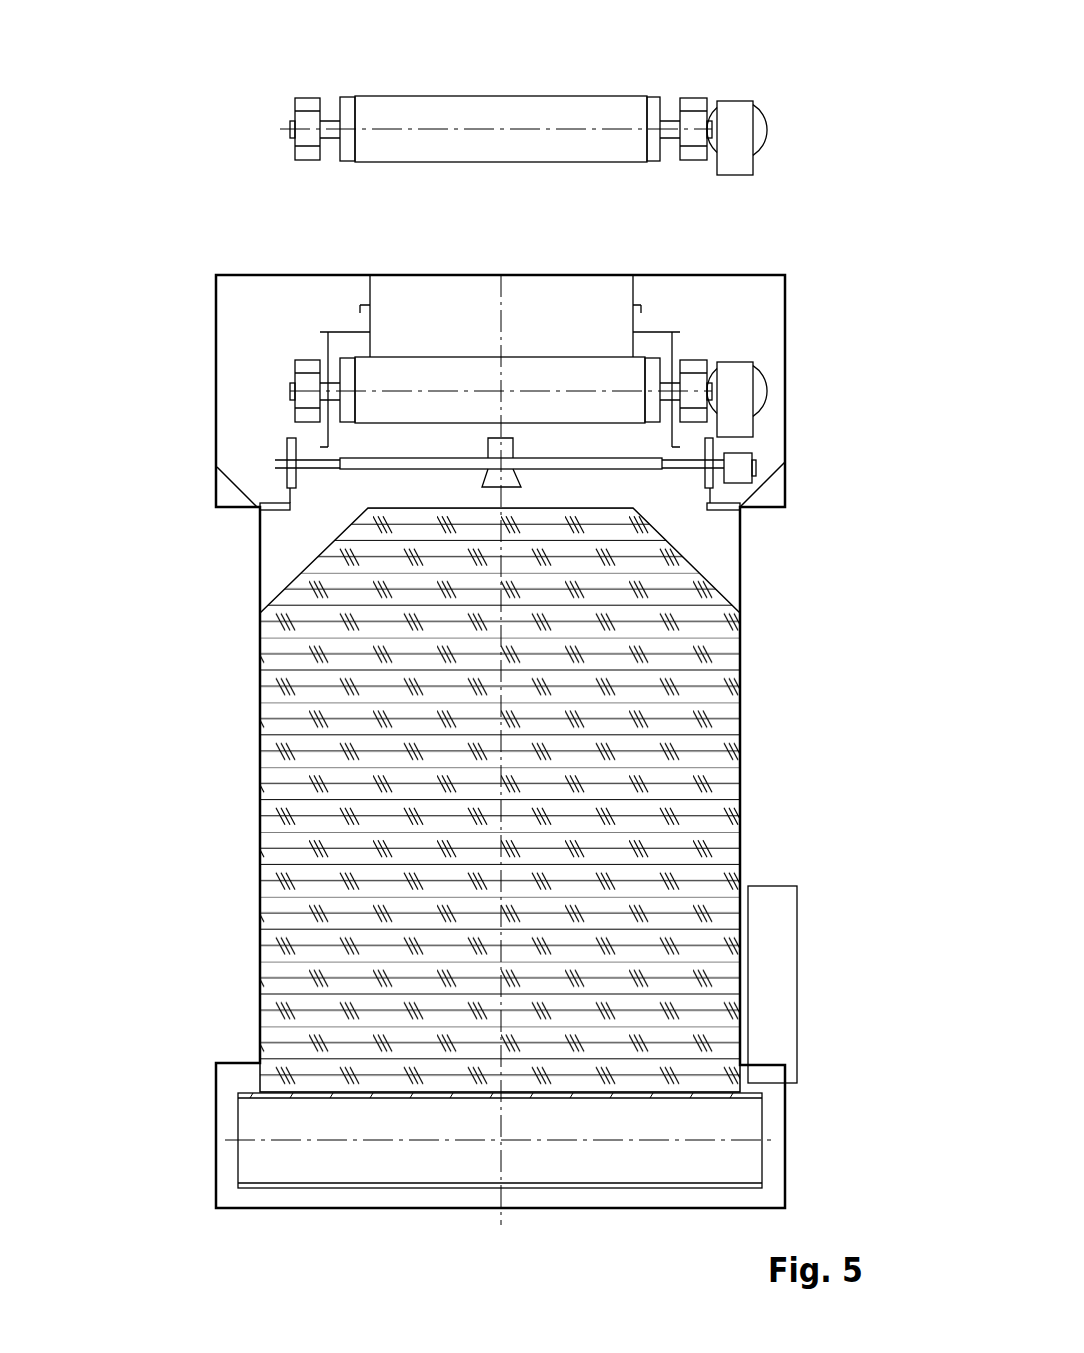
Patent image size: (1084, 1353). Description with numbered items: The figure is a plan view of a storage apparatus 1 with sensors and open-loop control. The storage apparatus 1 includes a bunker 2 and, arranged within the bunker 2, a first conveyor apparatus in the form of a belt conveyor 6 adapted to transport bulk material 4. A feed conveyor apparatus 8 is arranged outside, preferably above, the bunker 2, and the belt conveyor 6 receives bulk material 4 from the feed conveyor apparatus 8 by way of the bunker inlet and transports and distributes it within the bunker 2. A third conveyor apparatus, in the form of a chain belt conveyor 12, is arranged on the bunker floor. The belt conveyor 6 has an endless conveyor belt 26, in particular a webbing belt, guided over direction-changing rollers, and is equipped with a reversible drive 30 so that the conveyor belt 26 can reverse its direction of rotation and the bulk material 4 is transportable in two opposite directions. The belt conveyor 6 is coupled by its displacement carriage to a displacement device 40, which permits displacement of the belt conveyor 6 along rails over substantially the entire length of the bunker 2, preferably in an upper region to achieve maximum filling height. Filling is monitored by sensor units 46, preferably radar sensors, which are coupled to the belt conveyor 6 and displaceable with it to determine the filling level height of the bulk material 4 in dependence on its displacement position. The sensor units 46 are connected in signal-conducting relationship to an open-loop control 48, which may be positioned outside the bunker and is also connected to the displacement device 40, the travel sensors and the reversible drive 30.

The storage apparatus 1 is at (193, 153).
The bunker 2 is at (242, 350).
The bulk material 4 is at (700, 793).
The belt conveyor 6 is at (573, 323).
The feed conveyor apparatus 8 is at (548, 117).
The chain belt conveyor 12 is at (435, 1165).
The conveyor belt 26 is at (553, 303).
The reversible drive 30 is at (722, 357).
The displacement device 40 is at (767, 473).
The sensor units 46 is at (520, 478).
The open-loop control 48 is at (782, 948).